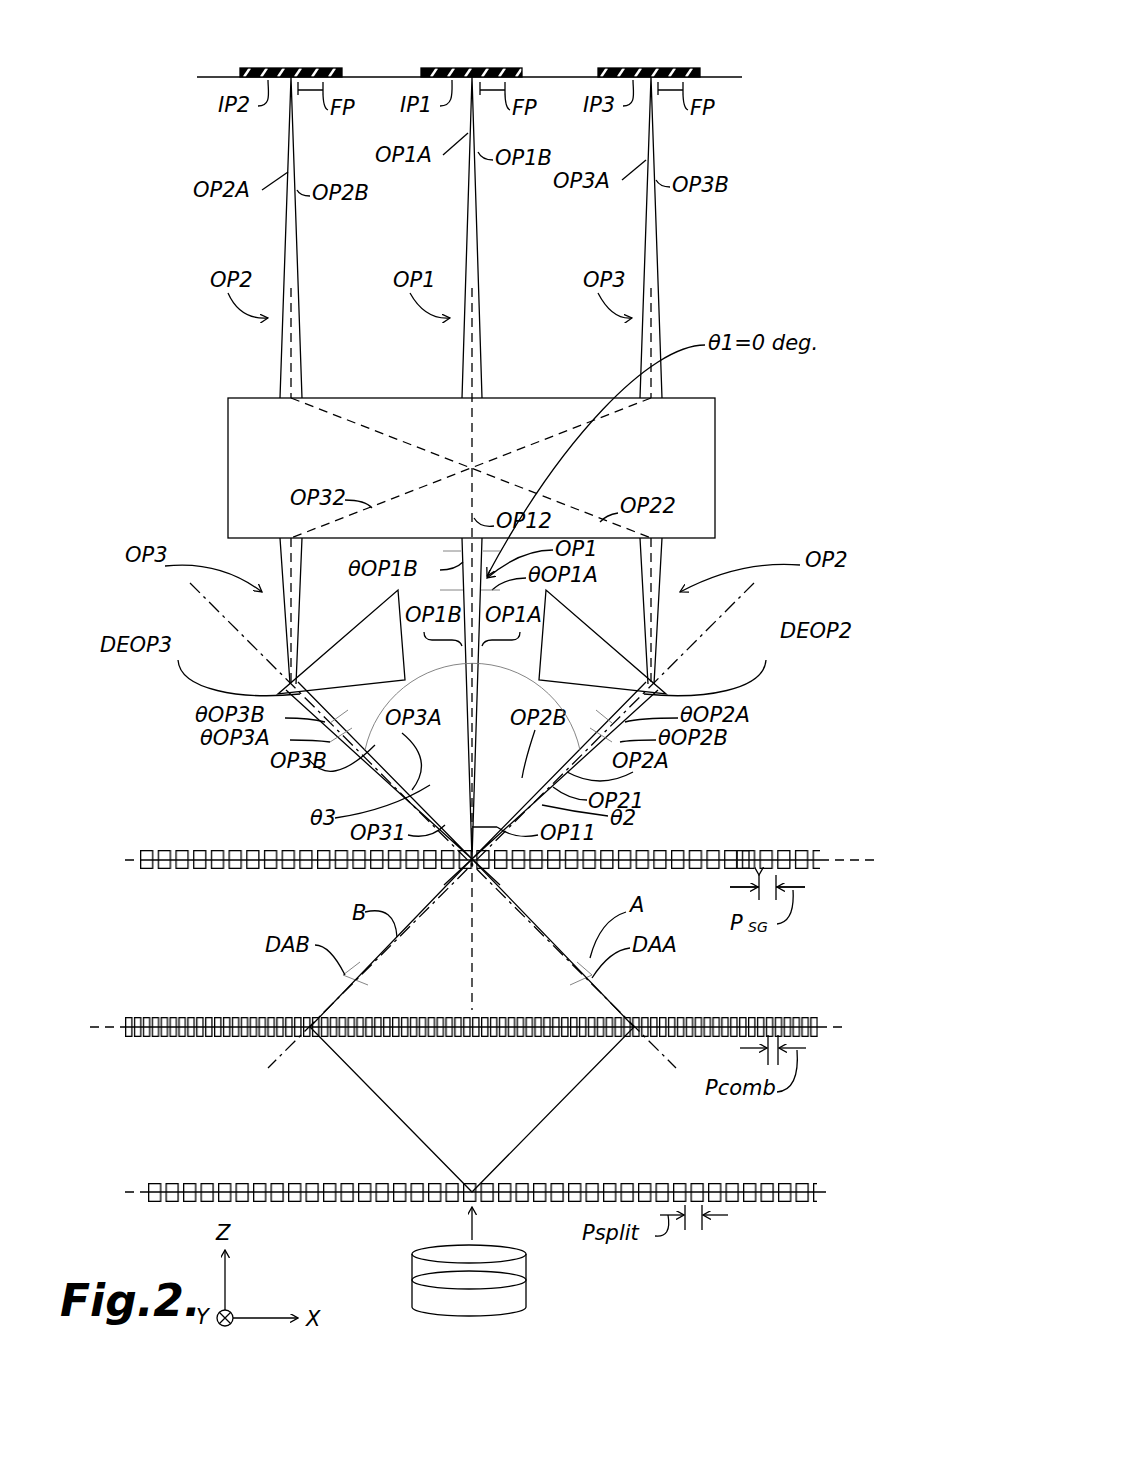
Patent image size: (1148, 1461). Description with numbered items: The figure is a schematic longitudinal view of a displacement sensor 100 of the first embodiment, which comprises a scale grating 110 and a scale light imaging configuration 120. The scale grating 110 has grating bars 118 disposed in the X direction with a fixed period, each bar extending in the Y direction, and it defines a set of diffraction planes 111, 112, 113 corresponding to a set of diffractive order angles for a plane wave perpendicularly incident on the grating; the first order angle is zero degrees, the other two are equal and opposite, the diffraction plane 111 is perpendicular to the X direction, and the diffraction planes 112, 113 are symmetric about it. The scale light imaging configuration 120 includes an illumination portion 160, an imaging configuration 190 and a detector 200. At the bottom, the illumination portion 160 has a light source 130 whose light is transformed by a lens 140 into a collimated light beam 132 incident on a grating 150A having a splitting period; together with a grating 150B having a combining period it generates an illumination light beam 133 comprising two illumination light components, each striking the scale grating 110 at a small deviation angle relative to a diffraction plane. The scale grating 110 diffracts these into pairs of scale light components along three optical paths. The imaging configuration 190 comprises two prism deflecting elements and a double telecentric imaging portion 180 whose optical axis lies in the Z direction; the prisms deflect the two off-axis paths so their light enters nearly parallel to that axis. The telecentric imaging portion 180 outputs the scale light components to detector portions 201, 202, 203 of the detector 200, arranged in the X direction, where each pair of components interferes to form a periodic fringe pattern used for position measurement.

The displacement sensor 100 is at (845, 108).
The scale grating 110 is at (502, 834).
The diffraction plane 111 is at (476, 690).
The diffraction plane 112 is at (656, 616).
The diffraction plane 113 is at (265, 658).
The grating bars 118 is at (727, 848).
The scale light imaging configuration 120 is at (791, 272).
The light source 130 is at (526, 1295).
The collimated light beam 132 is at (474, 1228).
The illumination light beam 133 is at (514, 892).
The lens 140 is at (526, 1268).
The grating 150A is at (770, 1185).
The grating 150B is at (769, 1015).
The illumination portion 160 is at (840, 1013).
The telecentric imaging portion 180 is at (228, 422).
The imaging configuration 190 is at (553, 729).
The detector 200 is at (521, 54).
The detector portion 201 is at (480, 58).
The detector portion 202 is at (299, 58).
The detector portion 203 is at (676, 58).